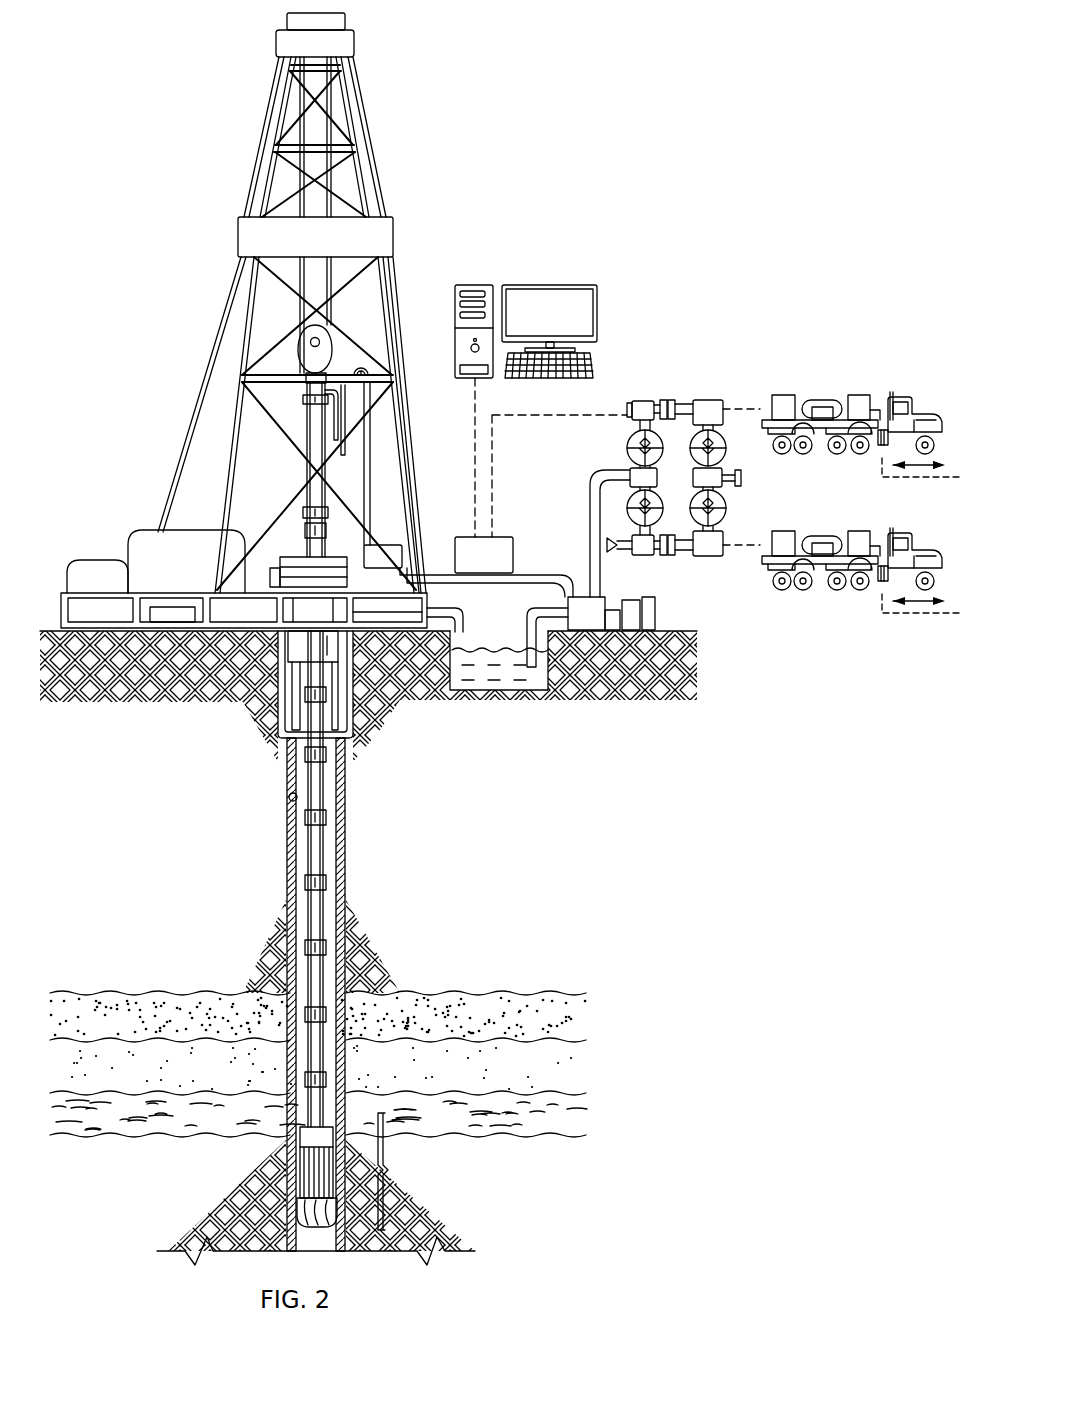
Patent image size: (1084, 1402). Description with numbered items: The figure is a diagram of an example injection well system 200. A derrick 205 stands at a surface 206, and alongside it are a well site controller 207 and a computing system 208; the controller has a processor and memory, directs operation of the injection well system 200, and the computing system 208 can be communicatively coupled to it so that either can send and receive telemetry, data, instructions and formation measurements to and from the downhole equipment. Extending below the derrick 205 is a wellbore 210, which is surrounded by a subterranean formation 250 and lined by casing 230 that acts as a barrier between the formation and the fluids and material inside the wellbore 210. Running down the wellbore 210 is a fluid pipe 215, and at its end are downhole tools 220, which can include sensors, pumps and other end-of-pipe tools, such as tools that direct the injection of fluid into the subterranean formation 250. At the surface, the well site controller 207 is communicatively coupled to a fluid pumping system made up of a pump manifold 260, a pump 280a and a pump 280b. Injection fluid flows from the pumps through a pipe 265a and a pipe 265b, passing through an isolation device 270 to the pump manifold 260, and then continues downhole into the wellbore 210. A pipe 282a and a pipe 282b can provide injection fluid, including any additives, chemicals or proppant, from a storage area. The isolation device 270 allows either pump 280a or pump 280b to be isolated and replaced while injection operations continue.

The injection well system 200 is at (749, 68).
The derrick 205 is at (363, 135).
The surface 206 is at (670, 630).
The well site controller 207 is at (460, 537).
The computing system 208 is at (552, 285).
The wellbore 210 is at (289, 795).
The fluid pipe 215 is at (326, 852).
The downhole tools 220 is at (388, 1170).
The casing 230 is at (346, 790).
The subterranean formation 250 is at (600, 1021).
The pump manifold 260 is at (588, 500).
The pipe 265a is at (748, 406).
The pipe 265b is at (751, 543).
The isolation device 270 is at (646, 400).
The pump 280a is at (822, 396).
The pump 280b is at (826, 532).
The pipe 282a is at (921, 479).
The pipe 282b is at (921, 615).